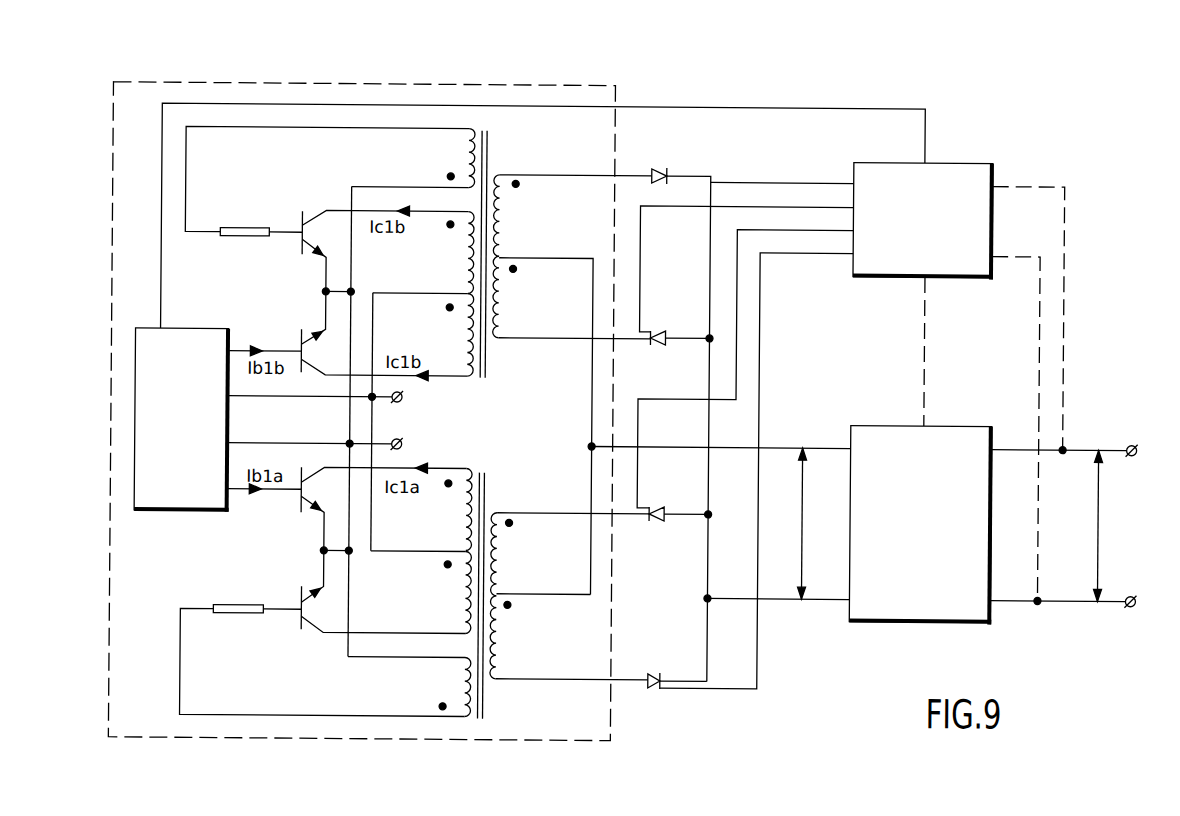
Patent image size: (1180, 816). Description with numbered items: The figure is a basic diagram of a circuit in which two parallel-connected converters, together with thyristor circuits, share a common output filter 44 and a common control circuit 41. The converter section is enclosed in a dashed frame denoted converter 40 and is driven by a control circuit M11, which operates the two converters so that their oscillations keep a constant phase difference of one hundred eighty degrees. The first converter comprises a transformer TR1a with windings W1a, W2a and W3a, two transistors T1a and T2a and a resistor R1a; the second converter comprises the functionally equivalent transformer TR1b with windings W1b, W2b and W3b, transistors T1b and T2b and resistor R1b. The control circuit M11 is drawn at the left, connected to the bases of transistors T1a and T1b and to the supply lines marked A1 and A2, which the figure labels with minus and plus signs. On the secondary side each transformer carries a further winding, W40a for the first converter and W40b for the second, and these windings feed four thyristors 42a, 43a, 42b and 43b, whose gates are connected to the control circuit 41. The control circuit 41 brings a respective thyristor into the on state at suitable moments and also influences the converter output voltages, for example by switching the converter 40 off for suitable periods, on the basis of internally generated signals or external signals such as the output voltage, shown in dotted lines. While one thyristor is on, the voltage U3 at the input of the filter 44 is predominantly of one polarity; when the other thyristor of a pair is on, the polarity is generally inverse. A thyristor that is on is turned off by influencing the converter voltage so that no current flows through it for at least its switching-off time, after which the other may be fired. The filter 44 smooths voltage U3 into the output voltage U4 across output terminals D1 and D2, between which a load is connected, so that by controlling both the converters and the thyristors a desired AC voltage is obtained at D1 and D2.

The converter 40 is at (597, 725).
The control circuit 41 is at (986, 171).
The thyristor 42a is at (745, 376).
The thyristor 42b is at (746, 276).
The thyristor 43a is at (750, 471).
The thyristor 43b is at (678, 415).
The output filter 44 is at (967, 613).
The control circuit M11 is at (193, 339).
The transistor T1a is at (347, 509).
The transistor T1b is at (348, 333).
The transistor T2a is at (369, 592).
The transistor T2b is at (378, 251).
The resistor R1a is at (323, 660).
The resistor R1b is at (327, 196).
The winding W1a is at (446, 509).
The winding W1b is at (449, 334).
The winding W2a is at (445, 592).
The winding W2b is at (449, 252).
The winding W3a is at (445, 686).
The winding W3b is at (449, 157).
The secondary winding W40a is at (569, 596).
The secondary winding W40b is at (571, 385).
The transformer TR1a is at (501, 594).
The transformer TR1b is at (504, 259).
The supply terminal A1 is at (337, 446).
The supply terminal A2 is at (337, 399).
The output terminal D1 is at (1080, 454).
The output terminal D2 is at (1077, 608).
The voltage at the input of the filter U3 is at (806, 523).
The output voltage U4 is at (1101, 525).